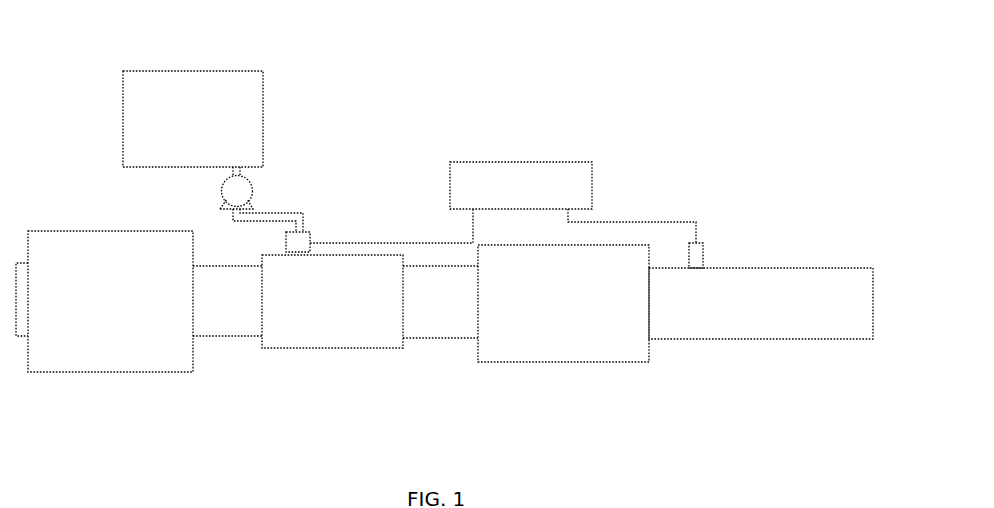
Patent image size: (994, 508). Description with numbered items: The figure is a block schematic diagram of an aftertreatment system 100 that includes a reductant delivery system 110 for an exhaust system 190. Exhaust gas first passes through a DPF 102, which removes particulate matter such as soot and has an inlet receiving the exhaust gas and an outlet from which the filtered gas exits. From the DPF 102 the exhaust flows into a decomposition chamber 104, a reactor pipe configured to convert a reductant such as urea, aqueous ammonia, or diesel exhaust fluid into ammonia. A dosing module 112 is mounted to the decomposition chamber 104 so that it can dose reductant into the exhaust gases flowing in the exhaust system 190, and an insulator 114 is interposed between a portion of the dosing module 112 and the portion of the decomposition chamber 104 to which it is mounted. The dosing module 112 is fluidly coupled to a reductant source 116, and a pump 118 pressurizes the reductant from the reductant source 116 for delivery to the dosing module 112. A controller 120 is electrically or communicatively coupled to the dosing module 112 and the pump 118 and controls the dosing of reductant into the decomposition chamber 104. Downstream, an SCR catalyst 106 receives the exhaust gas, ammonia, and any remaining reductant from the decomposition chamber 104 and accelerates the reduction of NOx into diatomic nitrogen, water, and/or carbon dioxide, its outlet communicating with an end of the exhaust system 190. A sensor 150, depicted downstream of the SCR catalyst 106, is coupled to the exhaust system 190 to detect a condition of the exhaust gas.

The aftertreatment system 100 is at (613, 209).
The DPF 102 is at (128, 372).
The decomposition chamber 104 is at (399, 255).
The SCR catalyst 106 is at (570, 362).
The reductant delivery system 110 is at (370, 196).
The dosing module 112 is at (311, 240).
The insulator 114 is at (285, 250).
The reductant source 116 is at (236, 71).
The pump 118 is at (222, 193).
The controller 120 is at (512, 160).
The sensor 150 is at (711, 257).
The exhaust system 190 is at (257, 395).